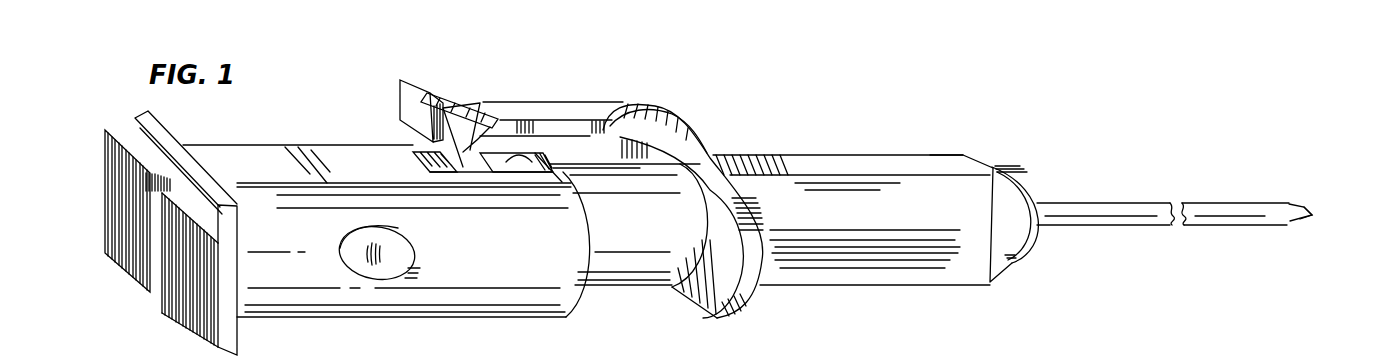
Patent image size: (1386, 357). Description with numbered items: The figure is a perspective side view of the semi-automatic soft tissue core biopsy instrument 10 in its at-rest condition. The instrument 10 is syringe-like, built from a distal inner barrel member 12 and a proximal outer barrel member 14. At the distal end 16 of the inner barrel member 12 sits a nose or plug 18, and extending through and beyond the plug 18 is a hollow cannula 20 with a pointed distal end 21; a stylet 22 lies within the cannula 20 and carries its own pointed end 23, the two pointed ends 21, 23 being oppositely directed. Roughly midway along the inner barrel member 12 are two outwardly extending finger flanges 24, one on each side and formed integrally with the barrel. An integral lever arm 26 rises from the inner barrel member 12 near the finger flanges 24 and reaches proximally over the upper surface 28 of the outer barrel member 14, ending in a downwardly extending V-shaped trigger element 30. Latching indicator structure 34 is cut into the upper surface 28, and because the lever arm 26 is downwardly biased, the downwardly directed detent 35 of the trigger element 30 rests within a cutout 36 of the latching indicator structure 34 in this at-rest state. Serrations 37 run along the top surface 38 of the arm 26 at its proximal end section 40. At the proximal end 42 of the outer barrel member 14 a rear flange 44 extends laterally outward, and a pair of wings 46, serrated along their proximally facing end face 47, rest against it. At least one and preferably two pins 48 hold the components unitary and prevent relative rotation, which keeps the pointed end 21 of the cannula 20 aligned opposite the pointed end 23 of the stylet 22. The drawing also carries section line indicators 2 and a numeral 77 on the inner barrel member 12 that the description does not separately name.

The section line 2- 2 is at (152, 223).
The biopsy instrument 10 is at (727, 119).
The inner barrel member 12 is at (918, 136).
The outer barrel member 14 is at (292, 133).
The distal end 16 is at (947, 160).
The plug 18 is at (1027, 172).
The hollow cannula 20 is at (1127, 221).
The pointed distal end 21 is at (1281, 201).
The stylet 22 is at (1297, 219).
The pointed end 23 is at (1312, 216).
The finger flanges 24 is at (745, 160).
The lever arm 26 is at (560, 112).
The upper surface 28 is at (346, 160).
The V-shaped trigger element 30 is at (463, 150).
The latching indicator structure 34 is at (547, 156).
The detent 35 is at (547, 156).
The cutout 36 is at (430, 152).
The serrations 37 is at (447, 96).
The top surface 38 is at (552, 110).
The proximal end section 40 is at (425, 80).
The proximal end 42 is at (238, 155).
The rear flange 44 is at (215, 200).
The wings 46 is at (166, 319).
The end face 47 is at (105, 162).
The pins 48 is at (362, 268).
The housing side wall 77 is at (817, 165).